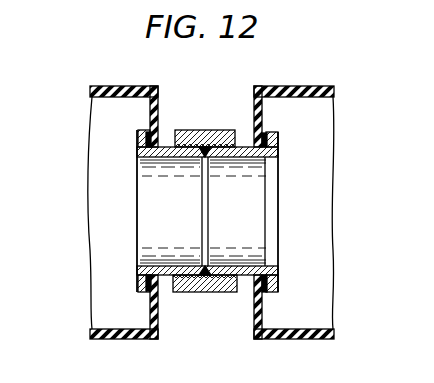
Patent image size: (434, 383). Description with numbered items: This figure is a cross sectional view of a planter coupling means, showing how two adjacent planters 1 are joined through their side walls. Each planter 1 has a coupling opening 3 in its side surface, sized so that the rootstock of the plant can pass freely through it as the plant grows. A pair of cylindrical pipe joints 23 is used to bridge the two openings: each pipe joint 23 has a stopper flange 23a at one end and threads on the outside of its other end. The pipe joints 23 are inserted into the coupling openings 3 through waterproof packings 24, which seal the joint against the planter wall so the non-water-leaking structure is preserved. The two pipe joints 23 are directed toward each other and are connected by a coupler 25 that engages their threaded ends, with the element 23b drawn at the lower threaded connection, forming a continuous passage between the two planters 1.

The planter 1 is at (100, 80).
The coupling opening 3 is at (152, 148).
The cylindrical pipe joint 23 is at (163, 266).
The stopper flange 23a is at (276, 143).
The lower block 23b is at (207, 280).
The waterproof packing 24 is at (147, 130).
The coupler 25 is at (203, 137).